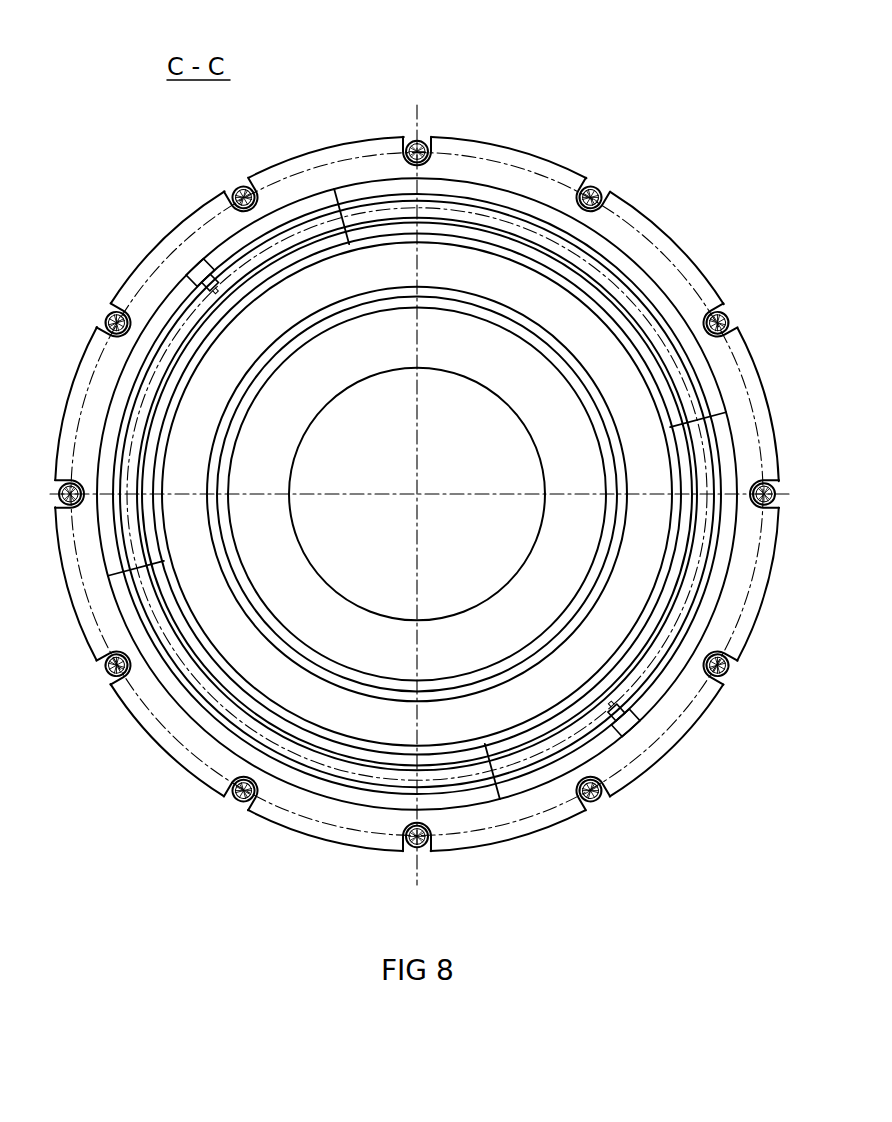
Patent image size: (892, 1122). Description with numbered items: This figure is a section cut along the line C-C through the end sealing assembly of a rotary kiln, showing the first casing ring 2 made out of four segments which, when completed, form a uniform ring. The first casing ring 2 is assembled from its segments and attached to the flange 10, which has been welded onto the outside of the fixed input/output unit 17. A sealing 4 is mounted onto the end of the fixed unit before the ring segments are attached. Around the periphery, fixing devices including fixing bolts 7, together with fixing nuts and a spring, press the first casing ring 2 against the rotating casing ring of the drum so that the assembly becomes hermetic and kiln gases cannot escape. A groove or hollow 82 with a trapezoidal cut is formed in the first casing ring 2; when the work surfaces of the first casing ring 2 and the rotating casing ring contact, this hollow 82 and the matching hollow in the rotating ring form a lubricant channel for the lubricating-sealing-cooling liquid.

The first casing ring 2 is at (497, 232).
The sealing 4 is at (620, 612).
The fixing bolt 7 is at (232, 186).
The flange 10 is at (203, 240).
The fixed input/output unit 17 is at (550, 600).
The groove or hollow 82 is at (612, 262).